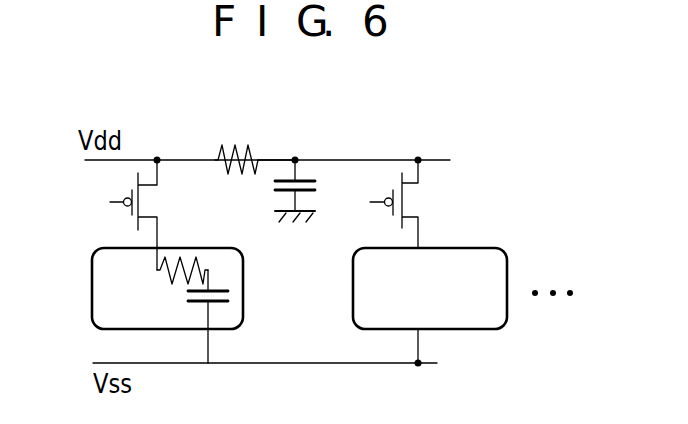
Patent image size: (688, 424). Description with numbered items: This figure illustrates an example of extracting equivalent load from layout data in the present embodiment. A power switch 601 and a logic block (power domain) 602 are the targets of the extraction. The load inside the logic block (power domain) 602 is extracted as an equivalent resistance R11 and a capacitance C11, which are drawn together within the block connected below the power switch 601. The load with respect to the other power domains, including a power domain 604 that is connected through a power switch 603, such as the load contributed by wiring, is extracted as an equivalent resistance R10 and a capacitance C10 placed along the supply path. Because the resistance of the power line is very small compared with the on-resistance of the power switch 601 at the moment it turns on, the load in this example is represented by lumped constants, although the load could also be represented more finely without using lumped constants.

The power switch 601 is at (113, 207).
The logic block (power domain) 602 is at (211, 278).
The power switch 603 is at (378, 206).
The power domain 604 is at (475, 329).
The equivalent resistance R10 is at (243, 145).
The capacitance C10 is at (319, 182).
The equivalent resistance R11 is at (186, 260).
The capacitance C11 is at (223, 283).